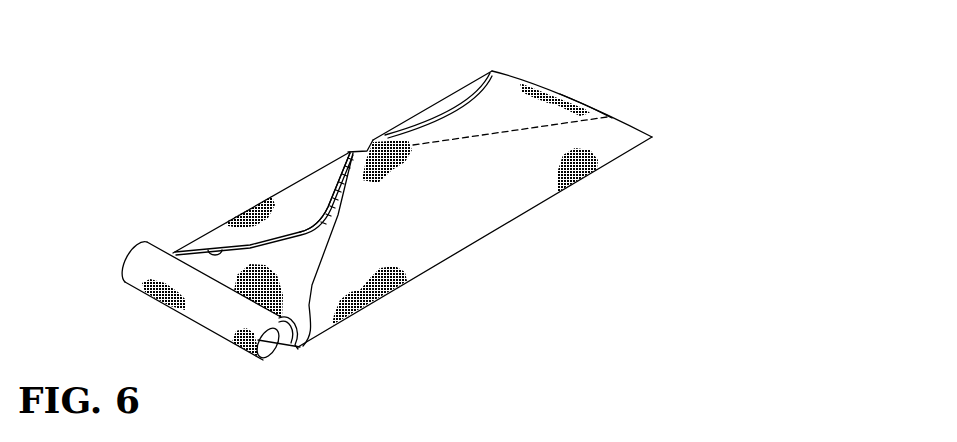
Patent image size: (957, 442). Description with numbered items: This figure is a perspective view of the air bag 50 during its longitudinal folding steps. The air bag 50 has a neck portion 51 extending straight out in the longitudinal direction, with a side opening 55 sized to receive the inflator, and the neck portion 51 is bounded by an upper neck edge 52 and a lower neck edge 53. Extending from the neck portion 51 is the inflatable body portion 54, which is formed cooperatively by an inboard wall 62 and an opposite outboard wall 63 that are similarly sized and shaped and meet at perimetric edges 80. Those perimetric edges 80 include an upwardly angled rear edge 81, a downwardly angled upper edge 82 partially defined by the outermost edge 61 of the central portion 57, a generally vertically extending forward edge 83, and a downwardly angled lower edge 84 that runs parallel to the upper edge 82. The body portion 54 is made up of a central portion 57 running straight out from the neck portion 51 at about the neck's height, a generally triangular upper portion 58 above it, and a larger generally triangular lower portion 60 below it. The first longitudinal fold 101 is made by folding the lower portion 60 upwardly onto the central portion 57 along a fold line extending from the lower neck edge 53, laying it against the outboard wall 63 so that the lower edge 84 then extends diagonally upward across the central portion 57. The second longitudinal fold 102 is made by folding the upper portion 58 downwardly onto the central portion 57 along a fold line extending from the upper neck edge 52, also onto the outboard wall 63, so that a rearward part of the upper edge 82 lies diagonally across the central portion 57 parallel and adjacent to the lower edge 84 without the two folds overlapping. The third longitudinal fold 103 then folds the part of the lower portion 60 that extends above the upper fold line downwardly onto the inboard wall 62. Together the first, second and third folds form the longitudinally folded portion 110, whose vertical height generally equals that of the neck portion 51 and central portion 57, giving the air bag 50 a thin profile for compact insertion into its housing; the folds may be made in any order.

The air bag 50 is at (341, 130).
The neck portion 51 is at (302, 352).
The upper neck edge 52 is at (172, 250).
The lower neck edge 53 is at (304, 345).
The inflatable body portion 54 is at (552, 93).
The side opening 55 is at (270, 358).
The central portion 57 is at (342, 198).
The upper portion 58 is at (292, 214).
The lower portion 60 is at (537, 183).
The outermost edge 61 is at (357, 149).
The inboard wall 62 is at (454, 197).
The outboard wall 63 is at (308, 273).
The perimetric edges 80 is at (598, 107).
The rear edge 81 is at (207, 250).
The upper edge 82 is at (373, 150).
The forward edge 83 is at (580, 100).
The lower edge 84 is at (304, 210).
The first longitudinal fold 101 is at (470, 232).
The second longitudinal fold 102 is at (266, 219).
The third longitudinal fold 103 is at (452, 103).
The longitudinally folded portion 110 is at (524, 78).